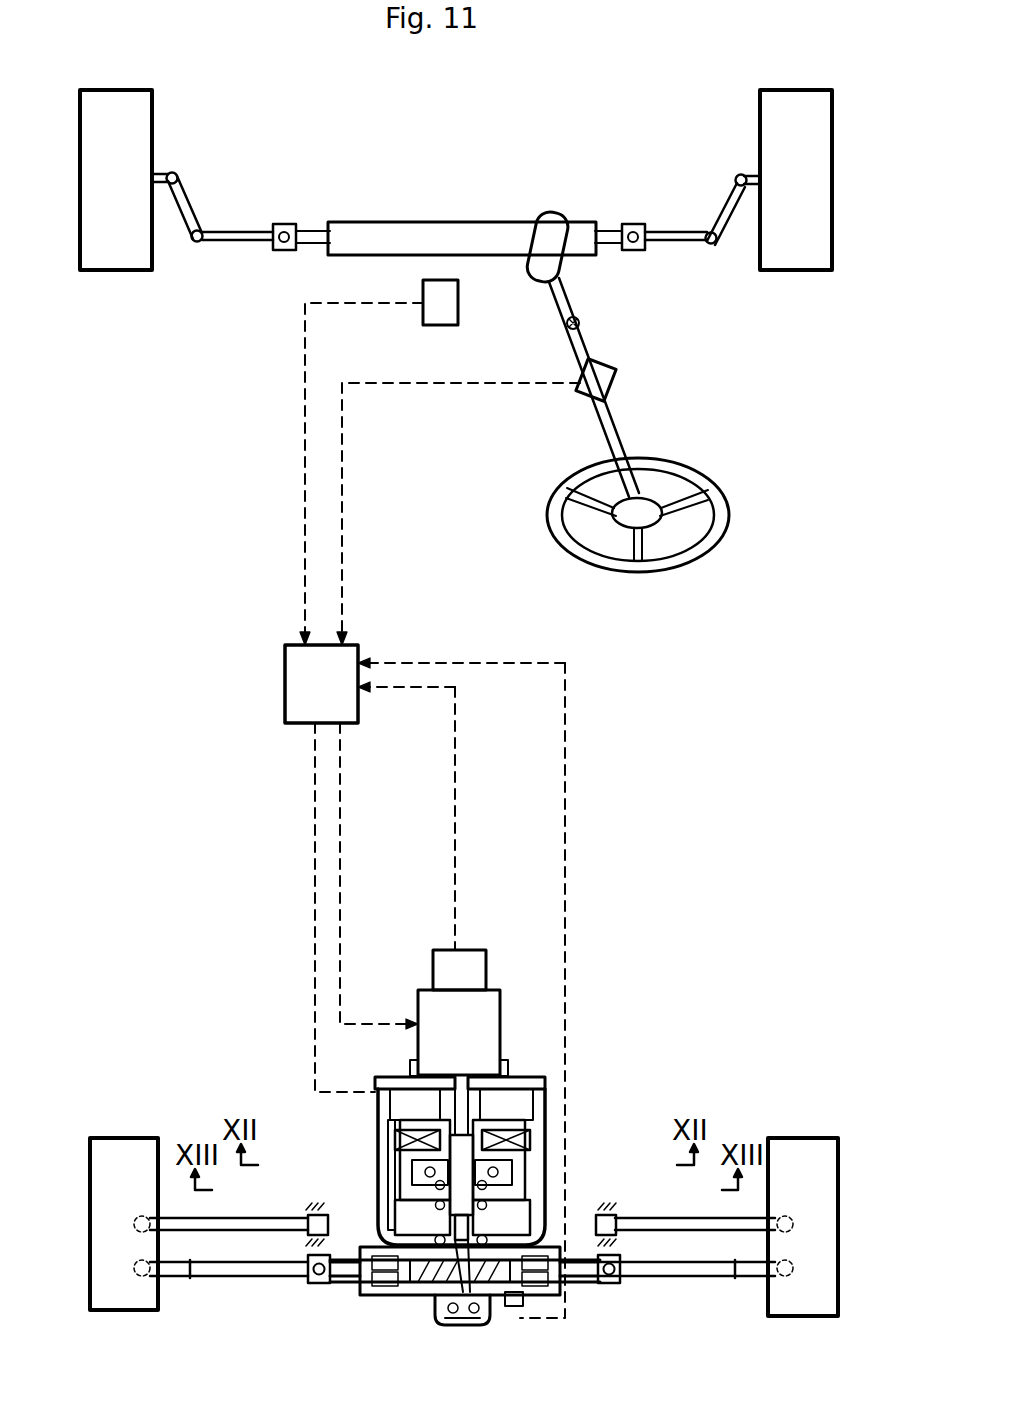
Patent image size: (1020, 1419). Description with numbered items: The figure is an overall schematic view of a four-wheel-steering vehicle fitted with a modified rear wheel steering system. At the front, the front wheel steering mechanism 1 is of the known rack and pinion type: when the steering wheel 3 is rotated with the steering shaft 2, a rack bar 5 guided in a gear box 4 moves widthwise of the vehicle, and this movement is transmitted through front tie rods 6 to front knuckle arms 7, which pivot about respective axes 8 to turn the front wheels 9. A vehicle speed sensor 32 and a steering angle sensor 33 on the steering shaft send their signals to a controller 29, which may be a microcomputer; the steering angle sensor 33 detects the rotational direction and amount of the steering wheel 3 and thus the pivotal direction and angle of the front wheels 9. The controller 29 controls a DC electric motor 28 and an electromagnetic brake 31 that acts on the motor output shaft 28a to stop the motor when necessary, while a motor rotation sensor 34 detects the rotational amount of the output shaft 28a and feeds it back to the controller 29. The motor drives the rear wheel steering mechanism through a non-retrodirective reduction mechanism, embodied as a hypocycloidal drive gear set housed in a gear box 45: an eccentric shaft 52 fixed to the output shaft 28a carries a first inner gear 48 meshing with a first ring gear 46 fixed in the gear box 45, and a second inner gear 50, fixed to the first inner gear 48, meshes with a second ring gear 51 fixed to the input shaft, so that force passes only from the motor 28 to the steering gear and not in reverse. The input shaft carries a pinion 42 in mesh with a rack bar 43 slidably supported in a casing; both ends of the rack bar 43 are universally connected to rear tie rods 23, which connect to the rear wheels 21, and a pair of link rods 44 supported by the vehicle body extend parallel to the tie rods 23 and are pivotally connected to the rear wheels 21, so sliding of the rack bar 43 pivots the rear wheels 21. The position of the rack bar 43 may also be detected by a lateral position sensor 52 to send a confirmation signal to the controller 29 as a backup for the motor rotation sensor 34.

The front wheel steering mechanism 1 is at (421, 212).
The steering shaft 2 is at (618, 428).
The steering wheel 3 is at (712, 482).
The gear box 4 is at (465, 222).
The rack bar 5 is at (310, 228).
The front tie rods 6 is at (672, 234).
The front knuckle arms 7 is at (194, 208).
The axes 8 is at (174, 172).
The front wheels 9 is at (118, 98).
The rear wheels 21 is at (114, 1150).
The rear tie rods 23 is at (228, 1278).
The electric motor 28 is at (420, 1005).
The motor output shaft 28a is at (513, 1070).
The controller 29 is at (348, 655).
The electromagnetic brake 31 is at (505, 1082).
The vehicle speed sensor 32 is at (460, 305).
The steering angle sensor 33 is at (612, 375).
The motor rotation sensor 34 is at (470, 962).
The pinion 42 is at (490, 1322).
The rack bar 43 is at (380, 1296).
The link rods 44 is at (242, 1220).
The gear box 45 is at (395, 1168).
The first ring gear 46 is at (402, 1150).
The first inner gear 48 is at (520, 1152).
The second inner gear 50 is at (520, 1192).
The second ring gear 51 is at (396, 1205).
The eccentric shaft 52 is at (392, 1125).